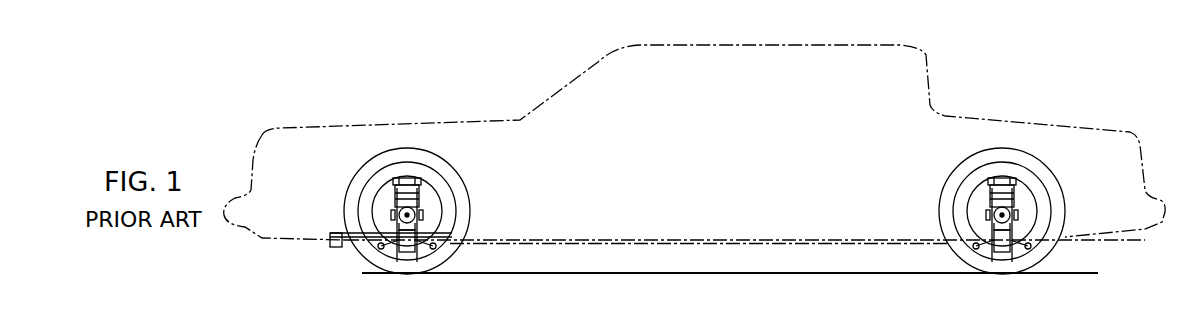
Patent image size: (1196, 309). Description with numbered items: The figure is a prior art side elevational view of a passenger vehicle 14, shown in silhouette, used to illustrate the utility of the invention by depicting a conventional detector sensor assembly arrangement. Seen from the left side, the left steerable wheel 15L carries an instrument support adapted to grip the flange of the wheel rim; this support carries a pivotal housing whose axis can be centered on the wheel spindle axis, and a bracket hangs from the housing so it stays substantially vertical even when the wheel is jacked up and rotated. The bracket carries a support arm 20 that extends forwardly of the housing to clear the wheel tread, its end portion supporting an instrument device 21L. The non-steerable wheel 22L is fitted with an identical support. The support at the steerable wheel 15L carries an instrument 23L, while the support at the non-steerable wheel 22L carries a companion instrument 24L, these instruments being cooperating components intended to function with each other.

The passenger vehicle 14 is at (934, 110).
The left steerable wheel 15L is at (440, 170).
The support arm 20 is at (340, 232).
The instrument device 21L is at (335, 248).
The vehicle non-steerable wheel 22L is at (965, 172).
The instrument 23L is at (407, 252).
The companion instrument 24L is at (1000, 252).